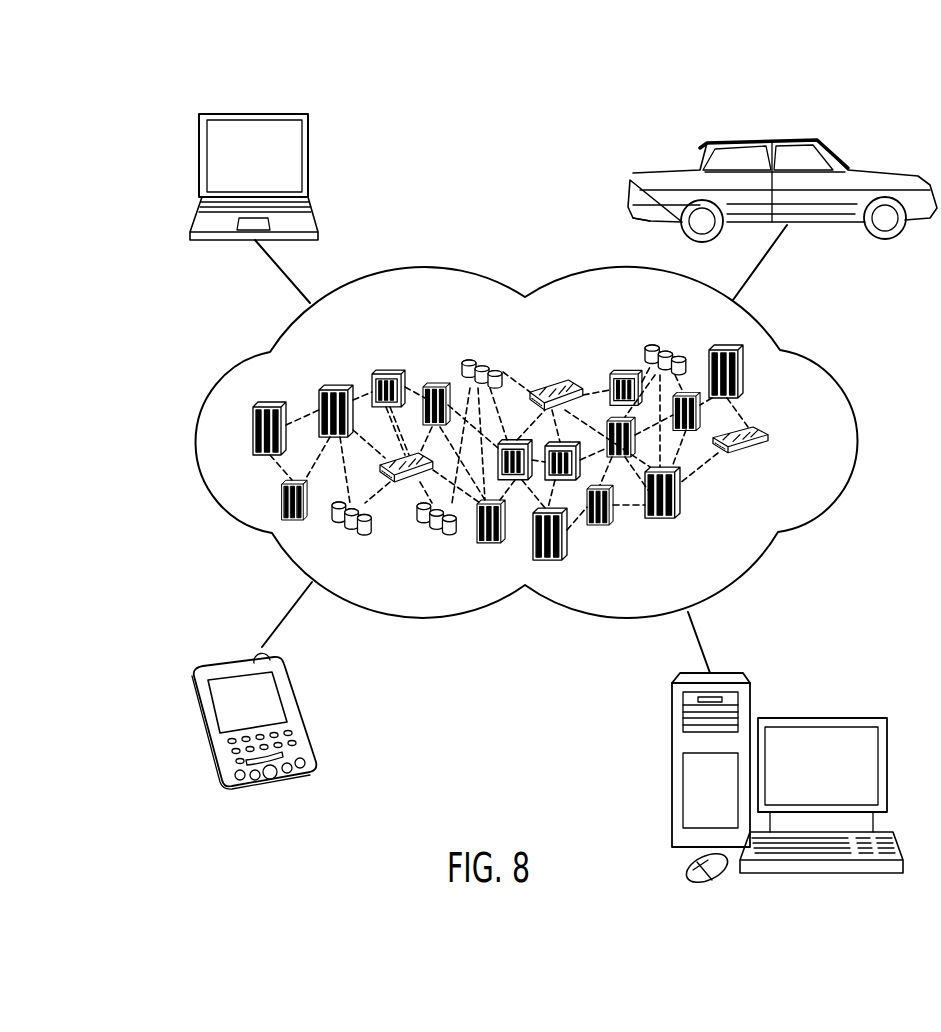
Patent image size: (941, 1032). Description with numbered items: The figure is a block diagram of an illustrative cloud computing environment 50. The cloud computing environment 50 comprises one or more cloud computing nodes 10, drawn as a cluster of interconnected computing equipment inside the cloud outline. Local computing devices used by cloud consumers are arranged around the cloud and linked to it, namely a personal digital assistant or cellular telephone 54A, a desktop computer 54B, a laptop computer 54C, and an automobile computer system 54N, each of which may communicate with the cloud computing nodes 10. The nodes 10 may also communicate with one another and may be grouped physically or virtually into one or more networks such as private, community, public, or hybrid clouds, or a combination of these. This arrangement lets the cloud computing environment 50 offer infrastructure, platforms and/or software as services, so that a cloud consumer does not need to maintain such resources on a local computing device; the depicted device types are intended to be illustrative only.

The cloud computing node 10 is at (776, 443).
The cloud computing environment 50 is at (833, 357).
The personal digital assistant or cellular telephone 54A is at (235, 662).
The desktop computer 54B is at (822, 715).
The laptop computer 54C is at (253, 112).
The automobile computer system 54N is at (763, 138).